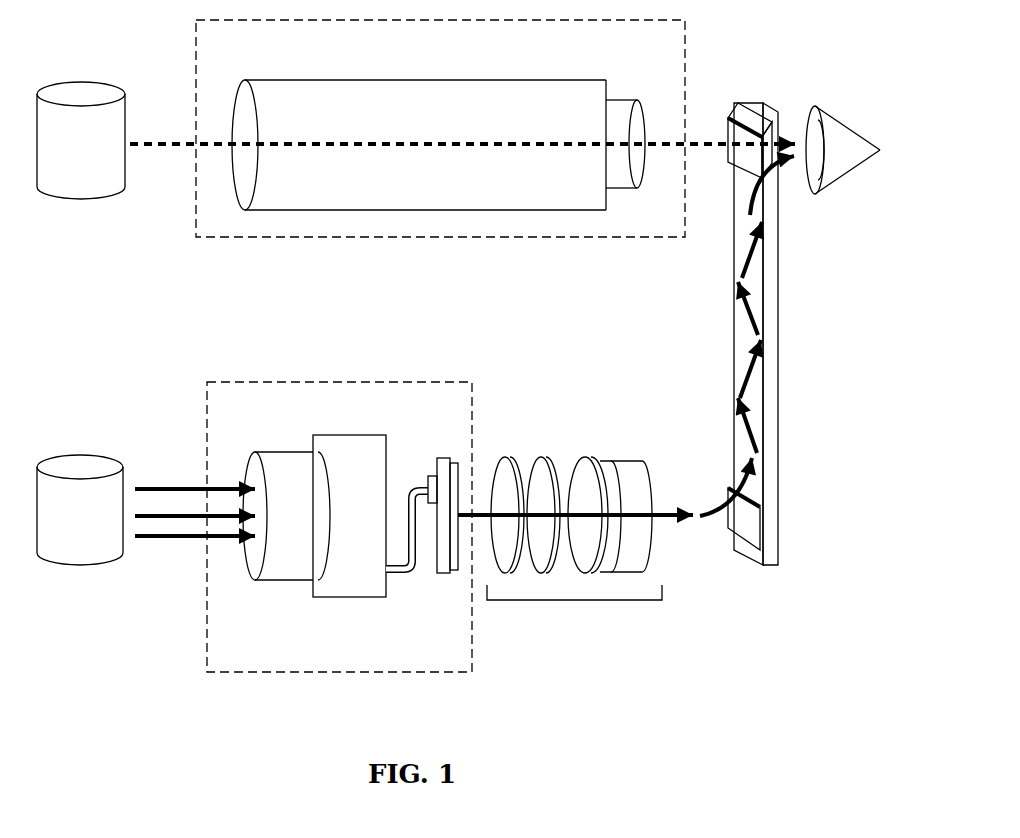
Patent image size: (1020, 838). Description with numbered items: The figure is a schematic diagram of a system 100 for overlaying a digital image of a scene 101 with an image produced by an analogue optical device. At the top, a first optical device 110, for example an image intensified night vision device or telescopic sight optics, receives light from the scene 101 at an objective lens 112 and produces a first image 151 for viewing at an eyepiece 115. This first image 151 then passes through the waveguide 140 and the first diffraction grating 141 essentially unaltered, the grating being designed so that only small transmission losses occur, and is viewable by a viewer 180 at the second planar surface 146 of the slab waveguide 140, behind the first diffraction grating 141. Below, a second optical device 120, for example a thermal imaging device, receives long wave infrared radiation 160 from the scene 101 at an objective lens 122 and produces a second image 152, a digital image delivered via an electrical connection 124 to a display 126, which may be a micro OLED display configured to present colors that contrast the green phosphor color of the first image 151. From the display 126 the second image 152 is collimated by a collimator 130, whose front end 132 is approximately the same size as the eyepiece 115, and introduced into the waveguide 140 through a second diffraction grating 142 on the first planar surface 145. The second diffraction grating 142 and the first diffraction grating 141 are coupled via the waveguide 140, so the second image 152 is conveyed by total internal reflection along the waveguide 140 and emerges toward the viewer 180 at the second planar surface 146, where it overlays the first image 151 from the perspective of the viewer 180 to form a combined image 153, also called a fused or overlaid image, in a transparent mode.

The system 100 is at (784, 652).
The scene 101 is at (64, 155).
The first optical device 110 is at (424, 43).
The objective lens 112 is at (246, 172).
The eyepiece 115 is at (646, 180).
The second optical device 120 is at (323, 405).
The objective lens 122 is at (251, 579).
The electrical connection 124 is at (400, 576).
The display 126 is at (455, 577).
The collimator 130 is at (574, 532).
The front end 132 is at (513, 459).
The waveguide 140 is at (780, 368).
The first diffraction grating 141 is at (728, 165).
The second diffraction grating 142 is at (735, 527).
The first planar surface 145 is at (745, 340).
The second planar surface 146 is at (786, 285).
The first image 151 is at (698, 137).
The second image 152 is at (473, 509).
The combined image 153 is at (792, 128).
The long wave infrared radiation 160 is at (148, 500).
The viewer 180 is at (841, 131).